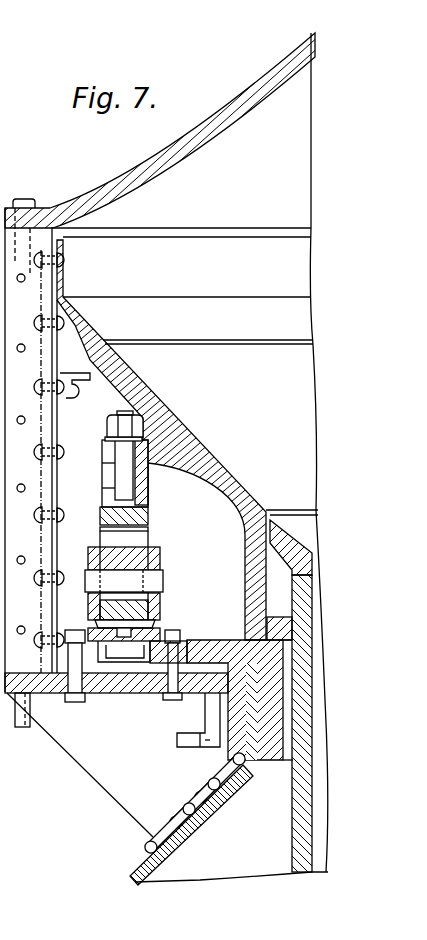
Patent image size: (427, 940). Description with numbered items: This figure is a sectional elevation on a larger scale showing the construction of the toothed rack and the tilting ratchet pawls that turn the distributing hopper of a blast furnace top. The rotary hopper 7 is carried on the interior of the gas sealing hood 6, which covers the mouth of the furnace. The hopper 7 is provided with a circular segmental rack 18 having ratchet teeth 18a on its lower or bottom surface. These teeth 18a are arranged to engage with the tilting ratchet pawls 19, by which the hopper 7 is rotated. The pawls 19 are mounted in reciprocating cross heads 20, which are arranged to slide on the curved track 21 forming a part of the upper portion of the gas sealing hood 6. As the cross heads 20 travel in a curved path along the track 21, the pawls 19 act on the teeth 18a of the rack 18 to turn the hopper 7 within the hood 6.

The gas sealing hood 6 is at (153, 852).
The rotary hopper 7 is at (162, 440).
The circular segmental rack 18 is at (137, 516).
The ratchet teeth 18a is at (140, 531).
The tilting ratchet pawls 19 is at (135, 549).
The reciprocating cross heads 20 is at (160, 598).
The curved track 21 is at (133, 668).